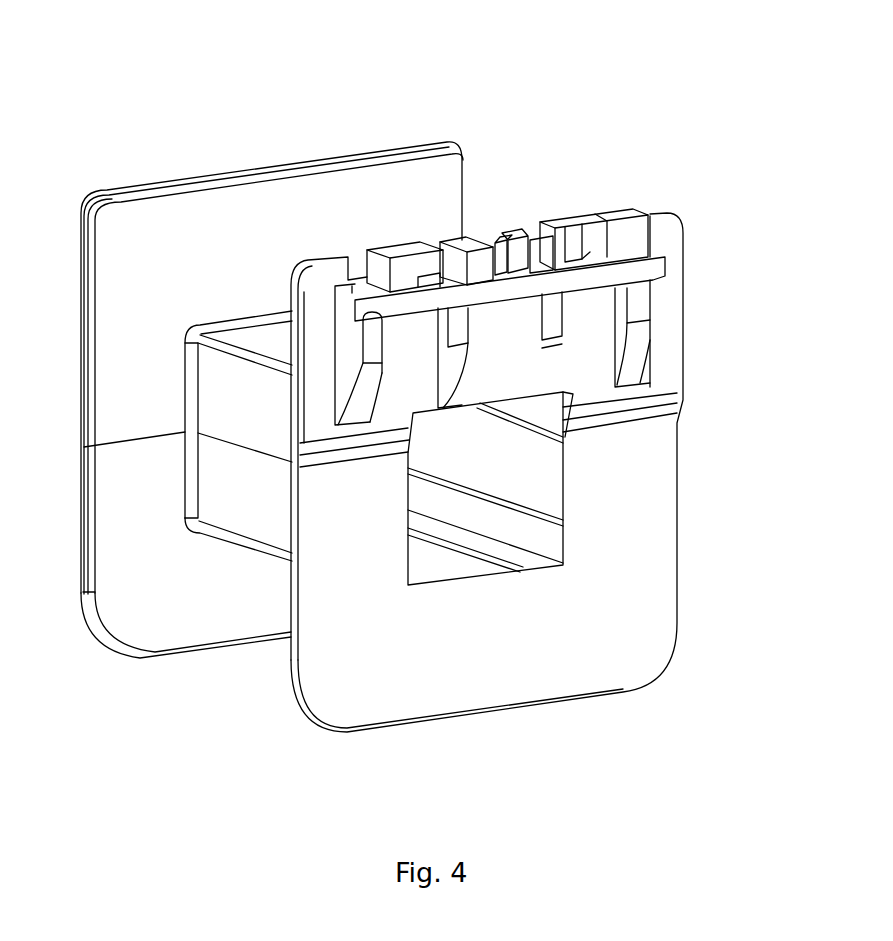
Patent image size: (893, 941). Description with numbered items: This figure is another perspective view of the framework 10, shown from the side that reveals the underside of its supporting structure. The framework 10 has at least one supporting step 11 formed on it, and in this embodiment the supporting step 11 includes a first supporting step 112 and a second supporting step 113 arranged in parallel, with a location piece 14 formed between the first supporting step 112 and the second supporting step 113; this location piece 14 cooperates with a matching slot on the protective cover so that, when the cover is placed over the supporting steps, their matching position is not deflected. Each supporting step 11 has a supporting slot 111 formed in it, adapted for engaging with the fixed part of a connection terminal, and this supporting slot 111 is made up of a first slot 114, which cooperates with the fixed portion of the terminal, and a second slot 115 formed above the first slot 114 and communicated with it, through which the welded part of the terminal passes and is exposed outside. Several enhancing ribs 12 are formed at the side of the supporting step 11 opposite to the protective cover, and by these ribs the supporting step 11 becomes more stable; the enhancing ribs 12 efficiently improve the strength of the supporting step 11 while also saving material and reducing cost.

The framework 10 is at (90, 48).
The supporting step 11 is at (647, 256).
The enhancing ribs 12 is at (632, 360).
The location piece 14 is at (520, 242).
The supporting slot 111 is at (487, 82).
The first supporting step 112 is at (398, 252).
The second supporting step 113 is at (617, 217).
The first slot 114 is at (445, 285).
The second slot 115 is at (457, 257).